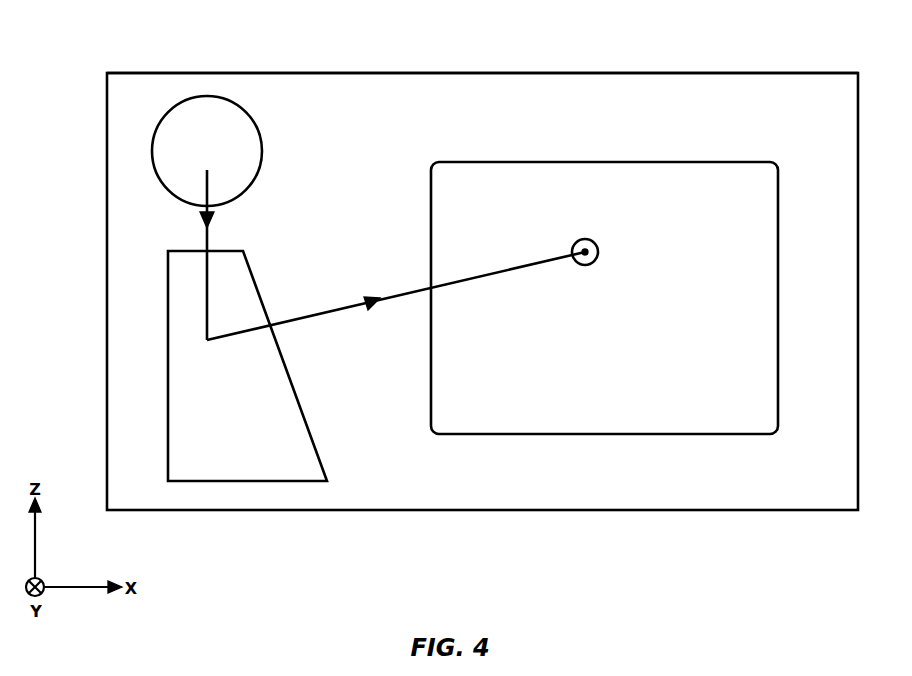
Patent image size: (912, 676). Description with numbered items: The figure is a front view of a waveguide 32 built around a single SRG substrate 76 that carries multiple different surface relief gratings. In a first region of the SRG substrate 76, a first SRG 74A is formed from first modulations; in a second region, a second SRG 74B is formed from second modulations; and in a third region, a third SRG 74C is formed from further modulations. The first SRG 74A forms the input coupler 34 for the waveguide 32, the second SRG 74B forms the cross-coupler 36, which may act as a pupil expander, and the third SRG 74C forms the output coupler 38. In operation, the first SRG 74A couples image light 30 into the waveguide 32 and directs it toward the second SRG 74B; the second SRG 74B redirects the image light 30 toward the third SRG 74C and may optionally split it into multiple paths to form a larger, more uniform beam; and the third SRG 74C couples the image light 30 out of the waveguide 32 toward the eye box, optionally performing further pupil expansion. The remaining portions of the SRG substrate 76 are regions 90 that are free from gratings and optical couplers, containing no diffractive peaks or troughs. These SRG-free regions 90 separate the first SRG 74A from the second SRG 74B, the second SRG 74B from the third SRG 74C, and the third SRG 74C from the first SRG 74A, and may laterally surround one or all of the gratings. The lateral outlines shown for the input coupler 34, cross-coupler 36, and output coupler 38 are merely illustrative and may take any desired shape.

The image light 30 is at (328, 312).
The waveguide 32 is at (597, 72).
The input coupler 34 is at (151, 151).
The cross-coupler 36 is at (191, 366).
The output coupler 38 is at (638, 298).
The SRG substrate 76 is at (328, 82).
The SRG-free regions 90 is at (803, 115).
The first SRG 74A is at (186, 163).
The second SRG 74B is at (224, 475).
The third SRG 74C is at (582, 421).